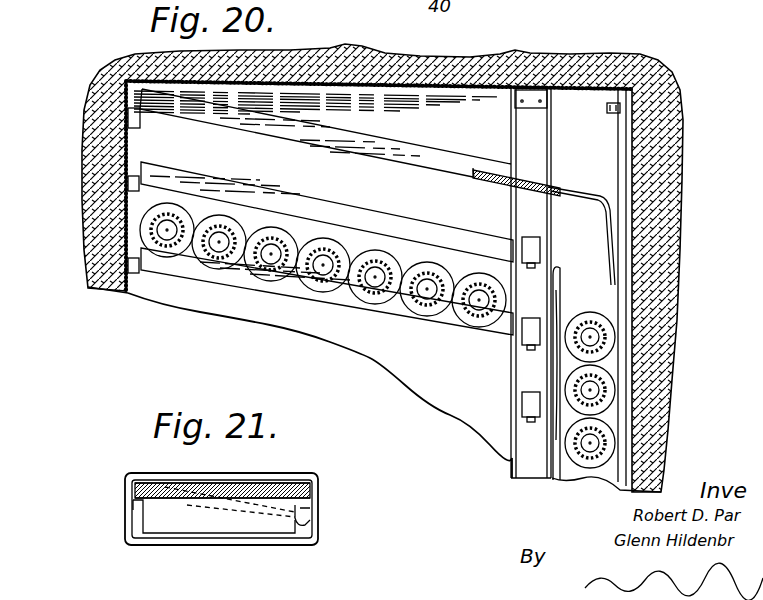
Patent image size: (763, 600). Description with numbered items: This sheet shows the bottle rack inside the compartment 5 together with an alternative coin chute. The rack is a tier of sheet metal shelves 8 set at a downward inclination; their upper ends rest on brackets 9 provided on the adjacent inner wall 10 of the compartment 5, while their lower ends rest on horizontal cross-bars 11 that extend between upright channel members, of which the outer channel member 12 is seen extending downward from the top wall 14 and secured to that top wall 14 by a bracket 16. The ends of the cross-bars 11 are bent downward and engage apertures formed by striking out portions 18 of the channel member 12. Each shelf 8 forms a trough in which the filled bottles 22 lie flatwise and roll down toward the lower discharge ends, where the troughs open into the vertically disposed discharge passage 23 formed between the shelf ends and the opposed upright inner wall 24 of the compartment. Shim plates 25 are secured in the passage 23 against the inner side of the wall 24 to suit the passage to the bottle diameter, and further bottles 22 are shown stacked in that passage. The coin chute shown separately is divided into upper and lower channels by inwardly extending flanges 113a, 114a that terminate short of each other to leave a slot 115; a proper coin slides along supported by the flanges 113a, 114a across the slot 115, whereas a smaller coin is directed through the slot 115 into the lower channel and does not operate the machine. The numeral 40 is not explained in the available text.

In FIG. 20, the earth or rock formation 40 is at (672, 166).
In FIG. 20, the top wall 14 is at (438, 90).
In FIG. 20, the shelves 8 is at (350, 153).
In FIG. 20, the cross-bars 11 is at (533, 190).
In FIG. 20, the bottles 22 is at (362, 253).
In FIG. 20, the outer channel member 12 is at (528, 478).
In FIG. 20, the bracket 16 is at (540, 107).
In FIG. 20, the struck-out portions 18 is at (540, 251).
In FIG. 20, the shim plates 25 is at (627, 160).
In FIG. 20, the upright inner wall 24 is at (640, 398).
In FIG. 20, the discharge passage 23 is at (583, 480).
In FIG. 20, the brackets 9 is at (141, 186).
In FIG. 20, the inner wall 10 is at (129, 294).
In FIG. 20, the compartment 5 is at (320, 385).
In FIG. 21, the flange 114a is at (310, 515).
In FIG. 21, the flange 113a is at (143, 500).
In FIG. 21, the slot 115 is at (187, 507).